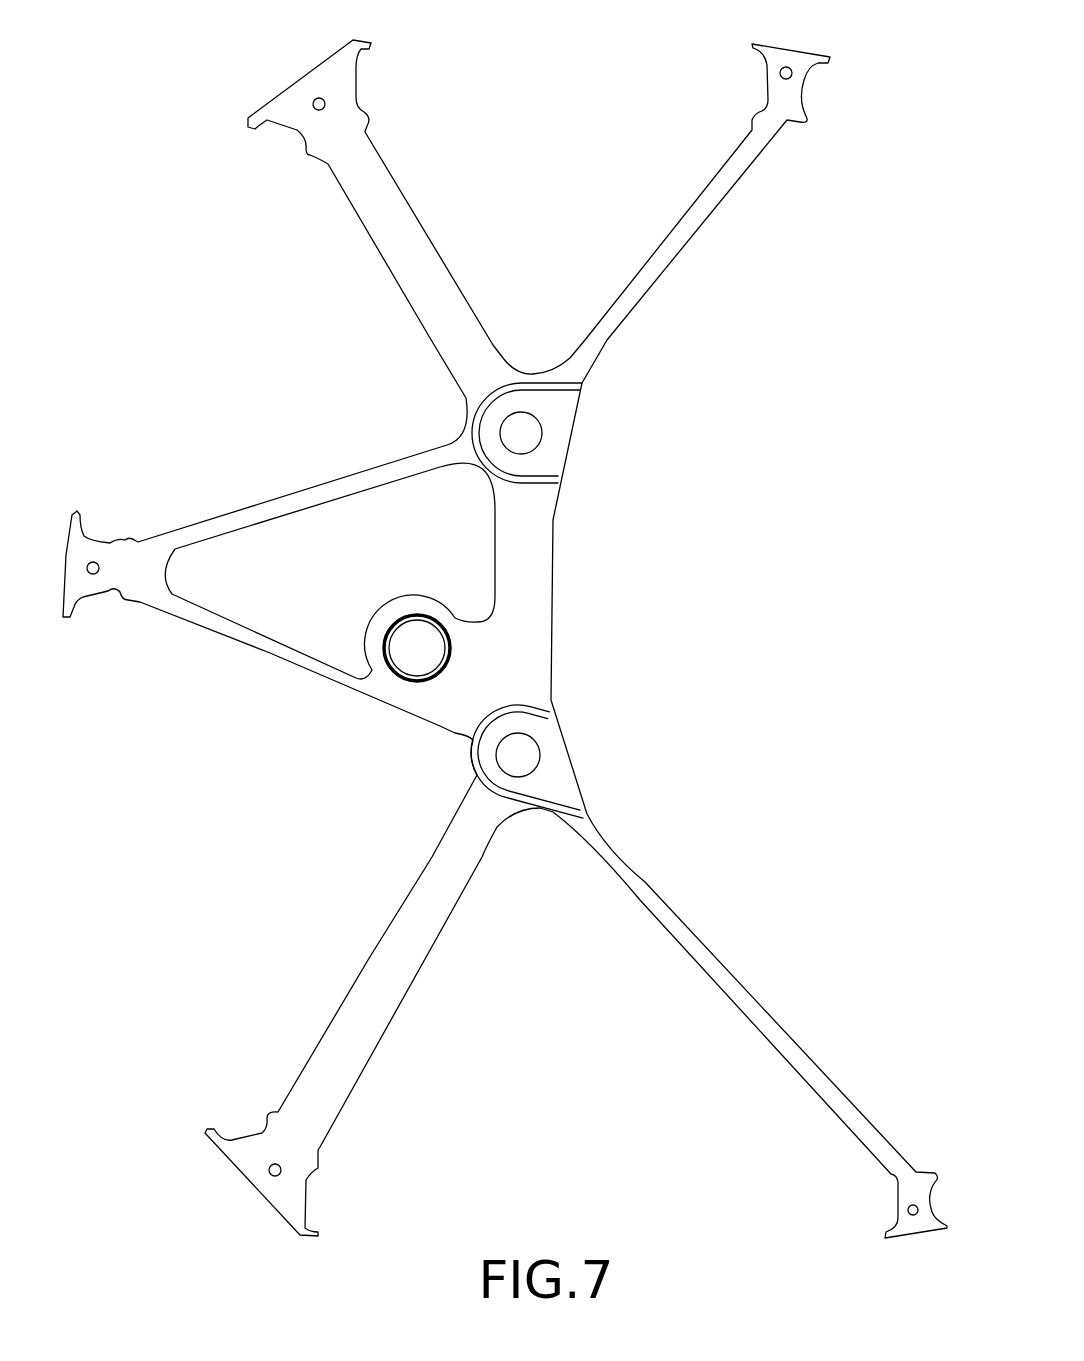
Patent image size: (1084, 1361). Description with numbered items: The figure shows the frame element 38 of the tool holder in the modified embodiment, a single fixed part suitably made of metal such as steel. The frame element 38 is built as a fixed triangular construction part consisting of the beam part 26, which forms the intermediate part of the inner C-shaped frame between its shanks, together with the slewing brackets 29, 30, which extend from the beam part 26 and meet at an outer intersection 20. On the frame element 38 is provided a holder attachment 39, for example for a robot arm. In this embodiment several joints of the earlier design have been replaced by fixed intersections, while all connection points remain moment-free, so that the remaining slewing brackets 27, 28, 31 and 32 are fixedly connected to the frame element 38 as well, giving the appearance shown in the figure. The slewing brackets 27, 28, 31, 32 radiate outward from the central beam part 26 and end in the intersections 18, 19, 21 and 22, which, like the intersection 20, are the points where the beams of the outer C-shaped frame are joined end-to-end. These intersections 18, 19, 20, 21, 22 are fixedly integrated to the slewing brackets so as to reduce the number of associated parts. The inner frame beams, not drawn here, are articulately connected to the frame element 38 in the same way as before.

The frame element 38 is at (141, 159).
The intersection 18 is at (793, 88).
The intersection 19 is at (345, 103).
The intersection 20 is at (92, 545).
The intersection 21 is at (298, 1190).
The intersection 22 is at (908, 1188).
The beam part 26 is at (528, 553).
The slewing bracket 27 is at (675, 242).
The slewing bracket 28 is at (408, 233).
The slewing bracket 29 is at (314, 492).
The slewing bracket 30 is at (293, 657).
The slewing bracket 31 is at (393, 958).
The slewing bracket 32 is at (697, 938).
The holder attachment 39 is at (402, 608).